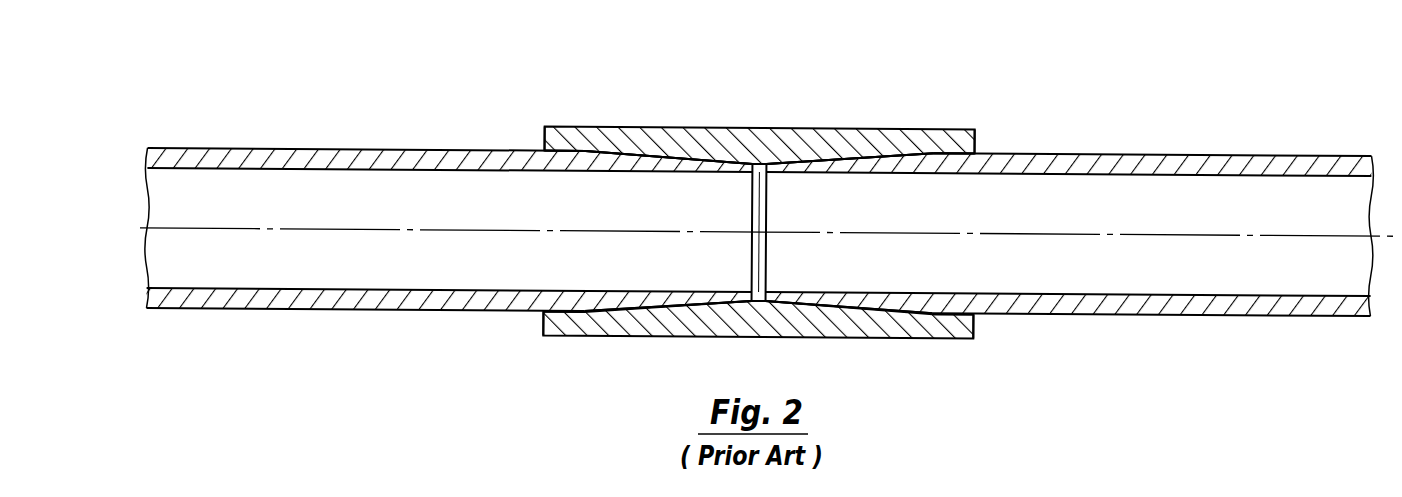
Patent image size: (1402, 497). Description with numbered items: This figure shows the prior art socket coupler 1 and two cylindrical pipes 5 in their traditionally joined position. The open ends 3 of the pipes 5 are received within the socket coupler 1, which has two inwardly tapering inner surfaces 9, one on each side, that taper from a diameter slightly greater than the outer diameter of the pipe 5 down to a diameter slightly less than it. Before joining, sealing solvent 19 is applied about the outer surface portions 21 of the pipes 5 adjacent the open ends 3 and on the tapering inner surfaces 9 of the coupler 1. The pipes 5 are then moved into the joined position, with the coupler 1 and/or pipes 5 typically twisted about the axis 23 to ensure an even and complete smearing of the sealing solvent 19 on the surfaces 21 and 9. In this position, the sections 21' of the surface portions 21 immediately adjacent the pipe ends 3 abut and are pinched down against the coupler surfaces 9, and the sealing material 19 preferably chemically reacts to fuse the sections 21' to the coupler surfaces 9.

The socket coupler 1 is at (814, 118).
The open ends 3 is at (752, 197).
The pipe 5 is at (222, 140).
The inwardly tapering surface 9 is at (576, 147).
The sealing solvent 19 is at (545, 147).
The outer surface portions 21 is at (747, 231).
The sections of the surface portions 21' is at (759, 181).
The axis 23 is at (216, 229).